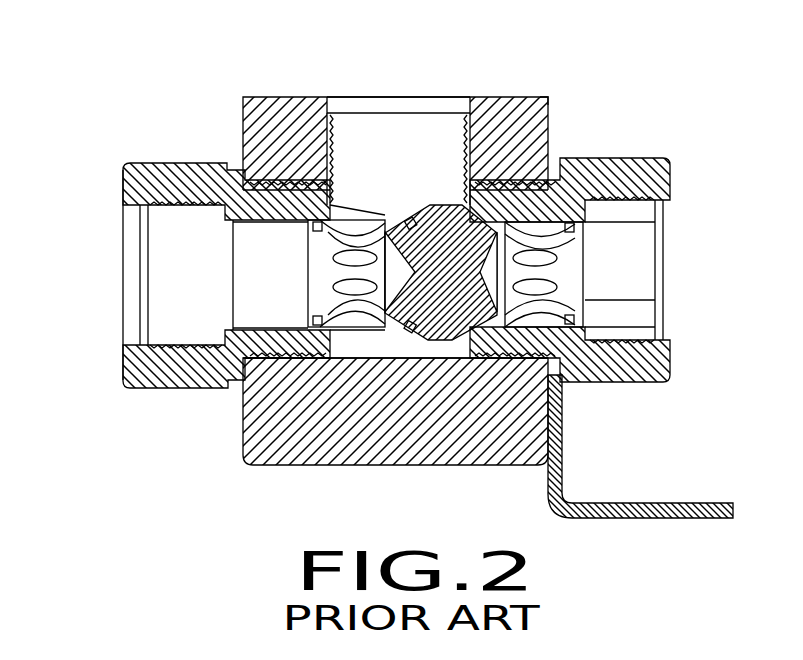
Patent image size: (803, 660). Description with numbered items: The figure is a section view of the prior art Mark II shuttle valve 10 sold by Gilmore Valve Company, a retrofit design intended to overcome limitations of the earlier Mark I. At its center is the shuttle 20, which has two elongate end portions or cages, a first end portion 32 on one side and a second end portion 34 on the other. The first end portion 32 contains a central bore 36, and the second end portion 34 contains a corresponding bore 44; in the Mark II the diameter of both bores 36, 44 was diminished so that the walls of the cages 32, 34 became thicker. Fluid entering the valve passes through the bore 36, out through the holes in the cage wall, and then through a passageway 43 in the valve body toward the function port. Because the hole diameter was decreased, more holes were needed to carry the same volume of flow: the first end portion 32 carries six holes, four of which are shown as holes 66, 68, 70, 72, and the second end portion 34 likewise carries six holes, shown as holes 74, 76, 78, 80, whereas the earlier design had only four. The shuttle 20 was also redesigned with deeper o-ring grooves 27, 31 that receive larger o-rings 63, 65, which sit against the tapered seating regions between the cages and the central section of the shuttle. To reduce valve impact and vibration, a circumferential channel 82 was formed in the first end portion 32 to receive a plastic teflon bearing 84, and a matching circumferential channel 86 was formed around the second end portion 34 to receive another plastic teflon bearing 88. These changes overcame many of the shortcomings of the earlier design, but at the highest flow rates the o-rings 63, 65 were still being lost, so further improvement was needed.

The prior art valve assembly 10 is at (168, 96).
The shuttle 20 is at (445, 360).
The o-ring groove 27 is at (446, 284).
The o-ring groove 31 is at (496, 336).
The first end portion 32 is at (340, 252).
The end portion 34 is at (570, 249).
The central bore 36 is at (342, 292).
The passageway 43 is at (366, 352).
The bore 44 is at (572, 291).
The o-ring 63 is at (410, 218).
The o-ring 65 is at (478, 214).
The hole 66 is at (348, 222).
The hole 68 is at (322, 275).
The hole 70 is at (193, 387).
The hole 72 is at (386, 342).
The hole 74 is at (549, 97).
The hole 76 is at (585, 265).
The hole 78 is at (582, 313).
The hole 80 is at (560, 423).
The circumferential channel 82 is at (318, 214).
The plastic teflon bearing 84 is at (300, 362).
The circumferential channel 86 is at (569, 214).
The plastic teflon bearing 88 is at (617, 383).